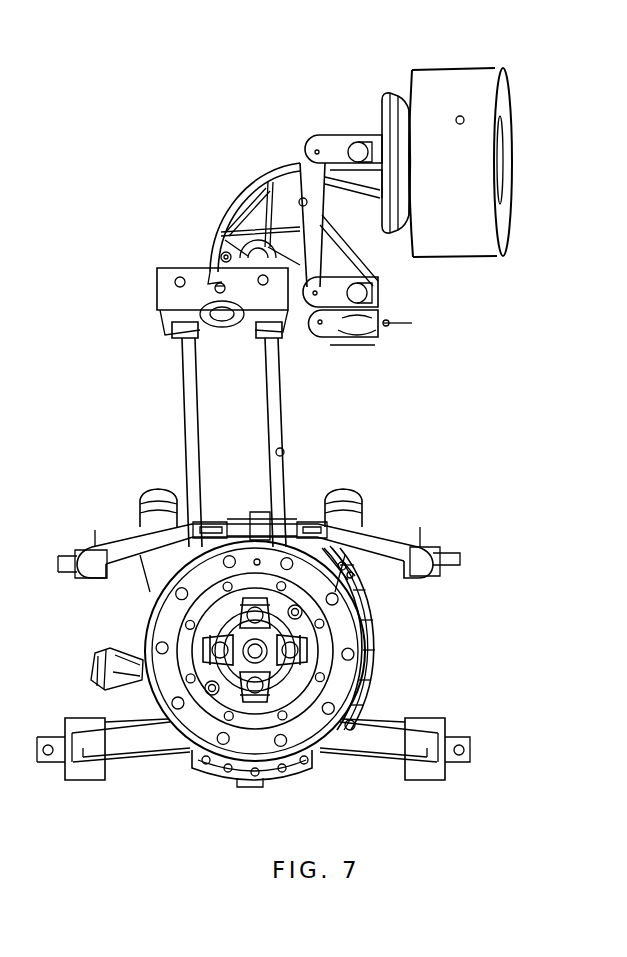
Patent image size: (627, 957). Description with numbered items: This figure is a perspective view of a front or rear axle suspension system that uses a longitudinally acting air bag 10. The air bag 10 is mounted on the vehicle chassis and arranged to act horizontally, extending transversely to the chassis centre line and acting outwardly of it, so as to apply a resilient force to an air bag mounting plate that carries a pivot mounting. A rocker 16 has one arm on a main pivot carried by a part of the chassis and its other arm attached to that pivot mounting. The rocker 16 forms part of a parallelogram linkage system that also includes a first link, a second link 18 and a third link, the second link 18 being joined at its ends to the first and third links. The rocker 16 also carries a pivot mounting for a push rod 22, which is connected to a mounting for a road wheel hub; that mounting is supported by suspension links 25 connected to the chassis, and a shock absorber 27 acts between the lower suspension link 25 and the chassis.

The air bag 10 is at (470, 121).
The rocker 16 is at (205, 262).
The second link 18 is at (300, 203).
The push rod 22 is at (190, 422).
The suspension links 25 is at (380, 540).
The shock absorber 27 is at (365, 563).